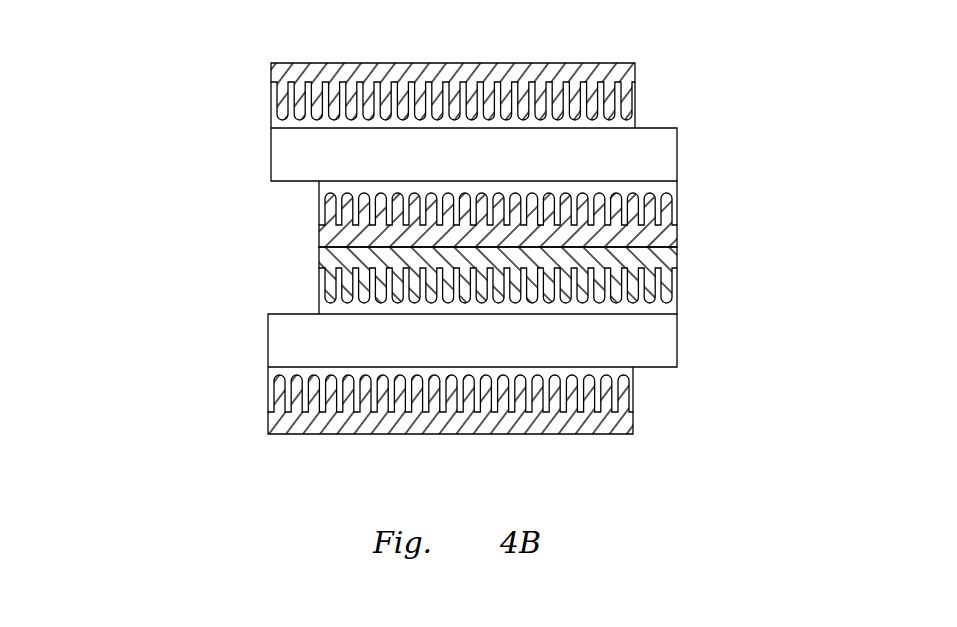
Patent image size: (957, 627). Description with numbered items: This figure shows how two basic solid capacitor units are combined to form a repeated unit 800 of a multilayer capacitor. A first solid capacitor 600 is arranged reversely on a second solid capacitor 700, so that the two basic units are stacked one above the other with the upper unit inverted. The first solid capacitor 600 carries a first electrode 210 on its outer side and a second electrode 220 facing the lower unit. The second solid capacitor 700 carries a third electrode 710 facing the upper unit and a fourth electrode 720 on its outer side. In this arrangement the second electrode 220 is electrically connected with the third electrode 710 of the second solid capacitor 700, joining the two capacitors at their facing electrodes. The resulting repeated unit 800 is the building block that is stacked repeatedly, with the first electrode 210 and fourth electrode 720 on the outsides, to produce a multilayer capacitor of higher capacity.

The first electrode 210 is at (315, 72).
The second electrode 220 is at (319, 238).
The first solid capacitor 600 is at (635, 63).
The second solid capacitor 700 is at (677, 250).
The third electrode 710 is at (318, 300).
The fourth electrode 720 is at (287, 427).
The repeated unit 800 is at (271, 63).